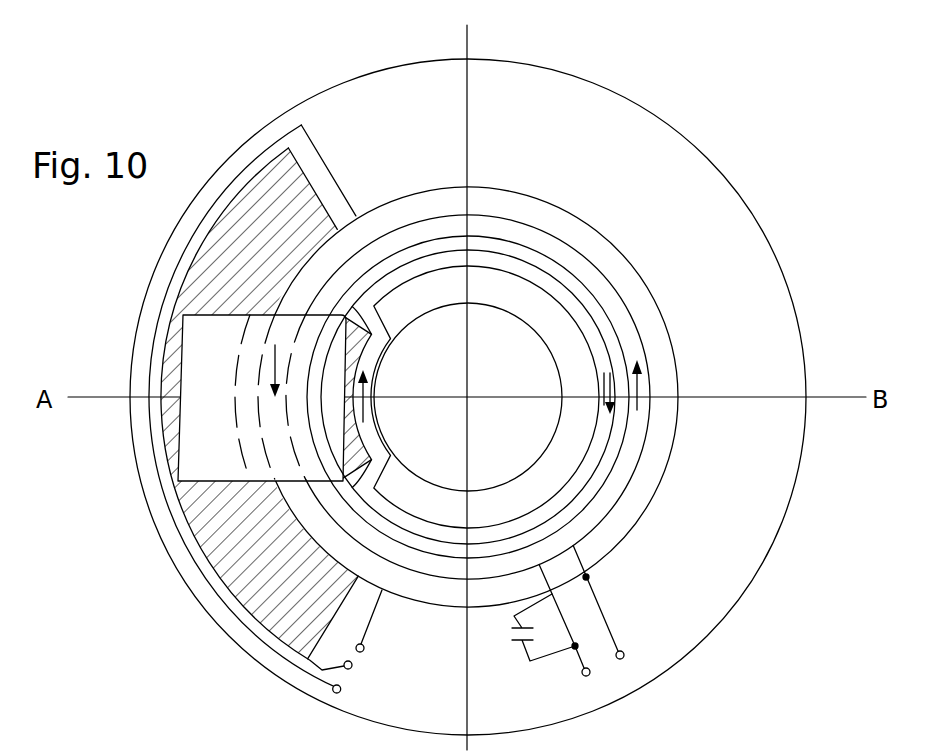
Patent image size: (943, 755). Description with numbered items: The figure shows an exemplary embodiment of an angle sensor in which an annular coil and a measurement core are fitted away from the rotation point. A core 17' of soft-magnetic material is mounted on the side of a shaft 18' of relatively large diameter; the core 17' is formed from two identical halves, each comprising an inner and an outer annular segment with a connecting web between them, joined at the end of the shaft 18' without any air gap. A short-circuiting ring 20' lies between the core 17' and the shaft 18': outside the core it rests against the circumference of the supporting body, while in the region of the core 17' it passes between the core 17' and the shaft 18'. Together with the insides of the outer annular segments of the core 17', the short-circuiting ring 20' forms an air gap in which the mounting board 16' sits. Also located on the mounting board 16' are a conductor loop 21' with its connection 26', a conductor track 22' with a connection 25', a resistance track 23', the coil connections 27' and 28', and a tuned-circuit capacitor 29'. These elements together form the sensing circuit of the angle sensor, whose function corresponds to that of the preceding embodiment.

The mounting board 16' is at (468, 397).
The core 17' is at (193, 417).
The shaft 18' is at (468, 397).
The short-circuiting ring 20' is at (478, 397).
The conductor loop 21' is at (283, 366).
The conductor track 22' is at (252, 432).
The resistance track 23' is at (266, 403).
The connection 25' is at (386, 665).
The connection 26' is at (398, 621).
The coil connection 27' is at (564, 641).
The coil connection 28' is at (631, 603).
The tuned-circuit capacitor 29' is at (531, 645).